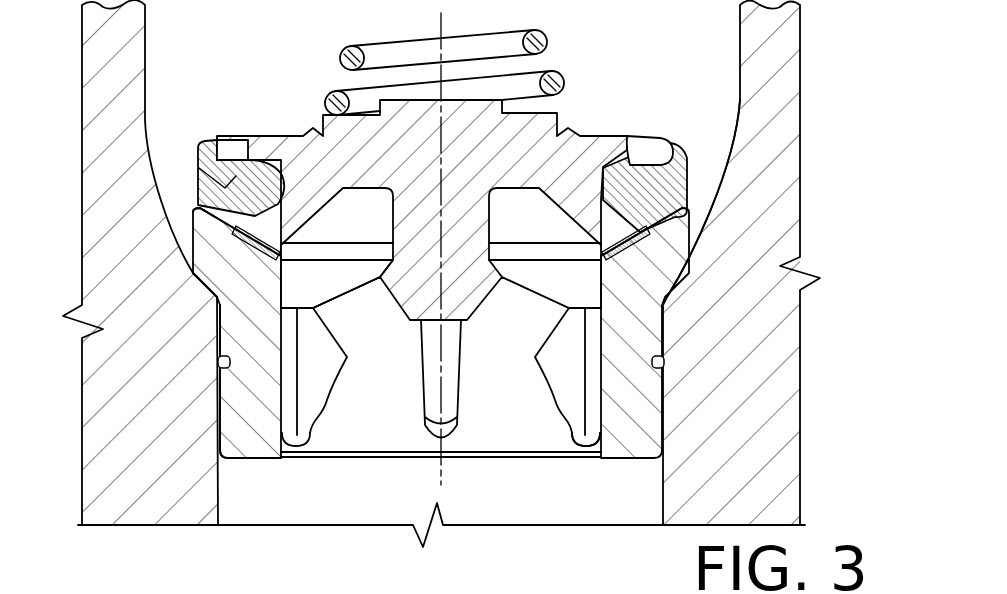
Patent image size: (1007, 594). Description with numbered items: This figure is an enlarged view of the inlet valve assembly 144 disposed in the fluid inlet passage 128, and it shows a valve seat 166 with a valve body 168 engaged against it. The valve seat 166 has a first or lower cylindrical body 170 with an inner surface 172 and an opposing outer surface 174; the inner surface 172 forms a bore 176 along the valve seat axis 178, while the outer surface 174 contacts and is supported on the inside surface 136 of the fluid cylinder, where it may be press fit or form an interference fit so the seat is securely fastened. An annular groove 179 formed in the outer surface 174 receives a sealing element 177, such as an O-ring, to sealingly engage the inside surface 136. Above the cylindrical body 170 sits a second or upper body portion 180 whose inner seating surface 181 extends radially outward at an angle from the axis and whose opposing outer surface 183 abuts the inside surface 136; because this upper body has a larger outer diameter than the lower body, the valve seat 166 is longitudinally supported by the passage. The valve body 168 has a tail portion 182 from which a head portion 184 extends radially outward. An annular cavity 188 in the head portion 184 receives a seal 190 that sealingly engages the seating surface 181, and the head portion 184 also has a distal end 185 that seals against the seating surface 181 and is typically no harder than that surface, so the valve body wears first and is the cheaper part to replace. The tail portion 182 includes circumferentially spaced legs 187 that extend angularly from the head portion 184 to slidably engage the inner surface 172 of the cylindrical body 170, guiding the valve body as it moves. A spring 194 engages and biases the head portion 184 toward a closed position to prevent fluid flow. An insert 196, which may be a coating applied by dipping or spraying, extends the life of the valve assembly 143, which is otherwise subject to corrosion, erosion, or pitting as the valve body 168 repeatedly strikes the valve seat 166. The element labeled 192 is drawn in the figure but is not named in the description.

The fluid inlet passage 128 is at (220, 485).
The inside surface 136 is at (660, 500).
The valve assembly 143 is at (735, 310).
The inlet valve assembly 144 is at (615, 126).
The valve seat 166 is at (627, 410).
The valve body 168 is at (634, 148).
The cylindrical body 170 is at (250, 433).
The inner surface 172 is at (587, 427).
The outer surface 174 is at (663, 423).
The bore 176 is at (380, 277).
The sealing element 177 is at (218, 363).
The valve seat axis 178 is at (443, 466).
The annular groove 179 is at (664, 362).
The second body portion 180 is at (200, 277).
The seating surface 181 is at (200, 200).
The tail portion 182 is at (490, 214).
The outer surface 183 is at (212, 275).
The head portion 184 is at (707, 146).
The distal end 185 is at (288, 220).
The legs 187 is at (317, 367).
The annular cavity 188 is at (249, 158).
The seal 190 is at (207, 143).
The gasket 192 is at (233, 256).
The spring 194 is at (376, 45).
The insert 196 is at (240, 262).